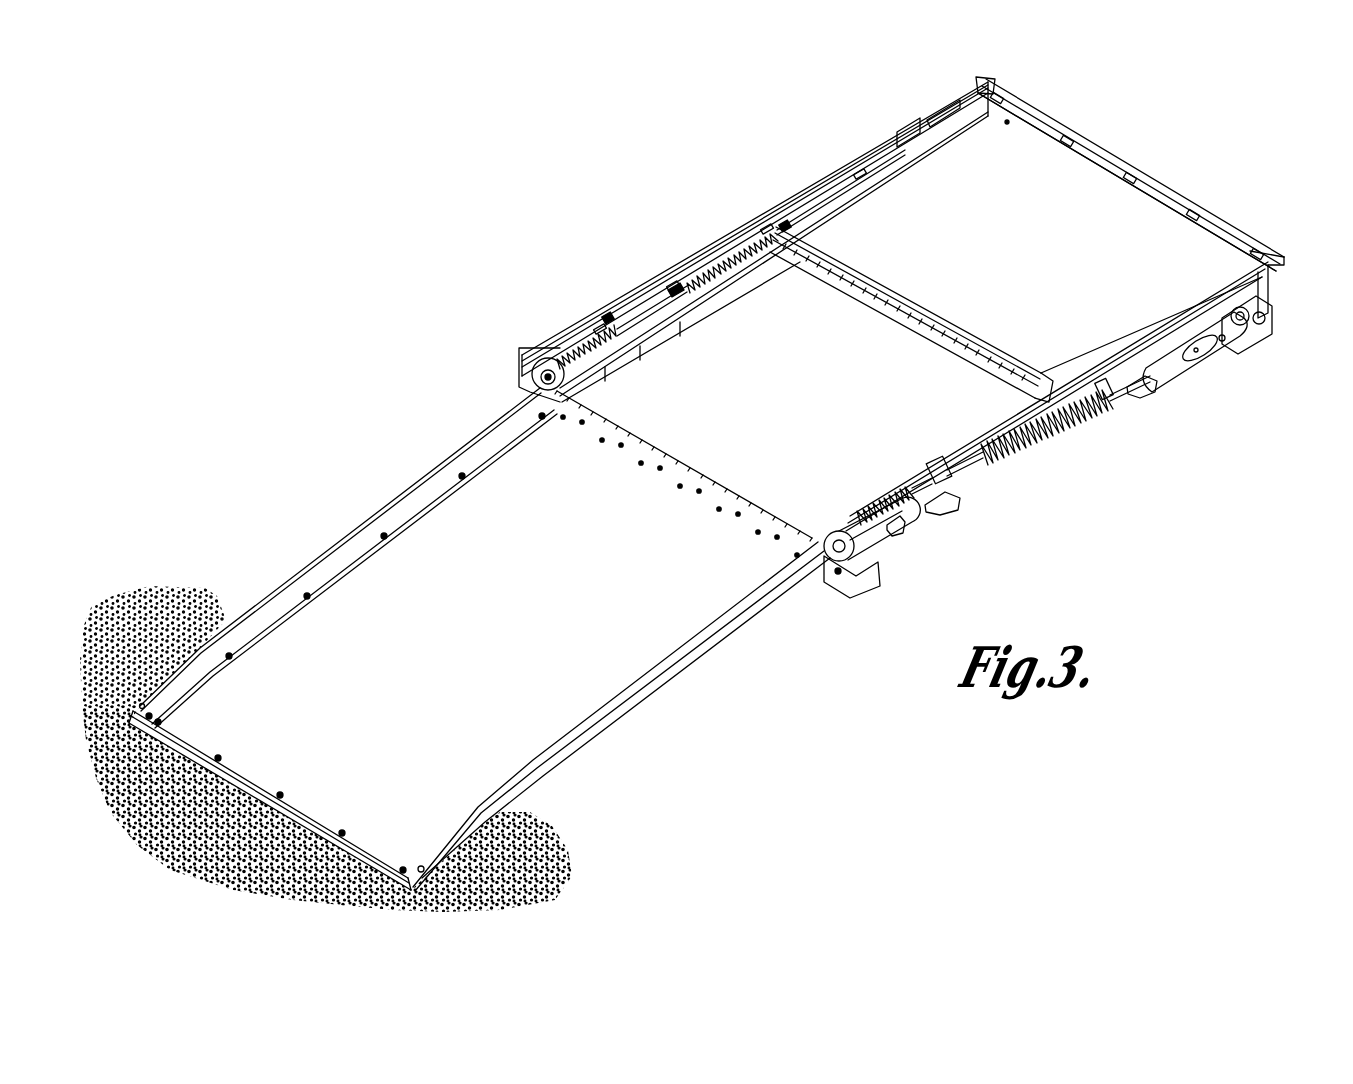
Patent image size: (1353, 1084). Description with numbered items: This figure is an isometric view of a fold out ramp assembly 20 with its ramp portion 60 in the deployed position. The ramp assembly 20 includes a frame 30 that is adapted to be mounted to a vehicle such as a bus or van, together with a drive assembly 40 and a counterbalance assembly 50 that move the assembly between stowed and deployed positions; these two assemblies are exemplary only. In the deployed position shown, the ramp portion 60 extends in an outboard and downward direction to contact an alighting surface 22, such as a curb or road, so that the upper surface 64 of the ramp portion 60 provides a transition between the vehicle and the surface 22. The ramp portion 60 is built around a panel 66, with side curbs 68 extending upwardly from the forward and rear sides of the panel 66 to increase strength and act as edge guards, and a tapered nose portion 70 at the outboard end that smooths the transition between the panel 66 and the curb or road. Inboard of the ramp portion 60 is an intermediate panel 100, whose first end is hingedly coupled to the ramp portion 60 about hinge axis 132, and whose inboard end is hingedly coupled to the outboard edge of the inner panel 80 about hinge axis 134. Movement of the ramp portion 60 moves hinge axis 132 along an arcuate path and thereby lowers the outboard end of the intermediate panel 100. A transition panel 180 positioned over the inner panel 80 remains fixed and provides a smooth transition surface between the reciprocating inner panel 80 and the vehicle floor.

The ramp assembly 20 is at (352, 246).
The alighting surface 22 is at (548, 832).
The frame 30 is at (1275, 291).
The drive assembly 40 is at (1222, 338).
The counterbalance assembly 50 is at (1064, 431).
The ramp portion 60 is at (459, 629).
The upper surface 64 is at (620, 670).
The panel 66 is at (448, 505).
The side curbs 68 is at (500, 414).
The tapered nose portion 70 is at (222, 777).
The inner panel 80 is at (802, 240).
The intermediate panel 100 is at (741, 334).
The hinge axis 132 is at (612, 420).
The hinge axis 134 is at (841, 272).
The transition panel 180 is at (1140, 235).